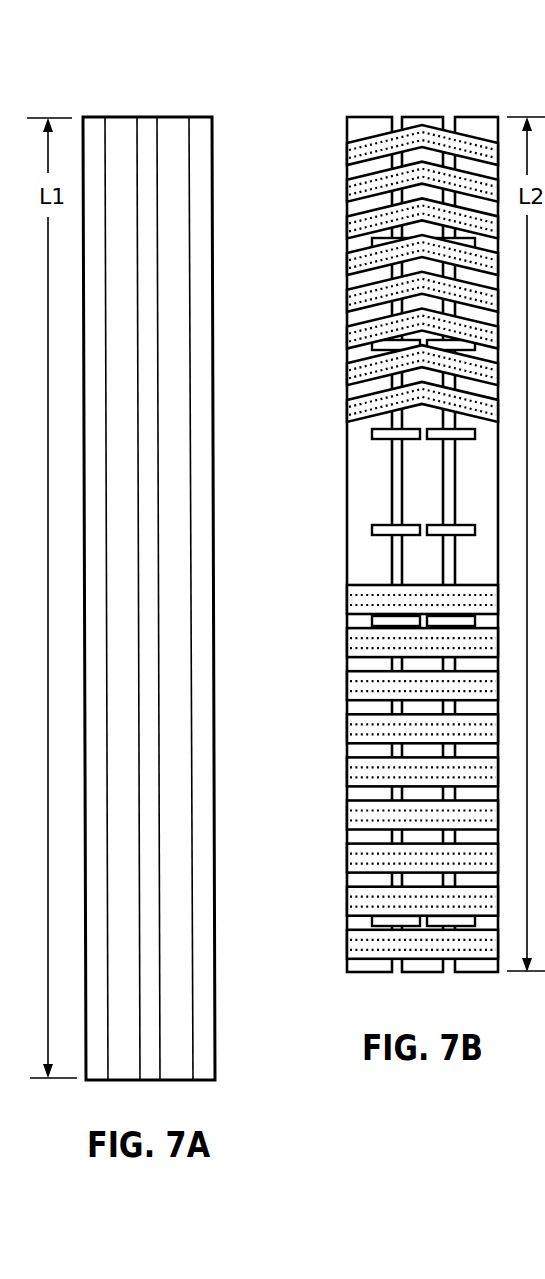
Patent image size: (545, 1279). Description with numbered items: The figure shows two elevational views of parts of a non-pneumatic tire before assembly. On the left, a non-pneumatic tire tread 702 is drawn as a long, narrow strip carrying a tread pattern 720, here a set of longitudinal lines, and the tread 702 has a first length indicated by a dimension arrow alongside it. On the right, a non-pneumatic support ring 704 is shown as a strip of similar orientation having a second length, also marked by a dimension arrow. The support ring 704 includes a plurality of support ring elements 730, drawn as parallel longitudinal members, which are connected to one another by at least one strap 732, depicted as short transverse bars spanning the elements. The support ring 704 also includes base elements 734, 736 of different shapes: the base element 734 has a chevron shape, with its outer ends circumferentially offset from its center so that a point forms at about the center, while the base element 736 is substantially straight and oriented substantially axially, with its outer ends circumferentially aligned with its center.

In FIG. 7A, the non-pneumatic tire tread 702 is at (190, 552).
In FIG. 7A, the tread pattern 720 is at (177, 188).
In FIG. 7B, the non-pneumatic support ring 704 is at (386, 498).
In FIG. 7B, the support ring elements 730 is at (423, 548).
In FIG. 7B, the strap 732 is at (450, 526).
In FIG. 7B, the base element 734 is at (385, 345).
In FIG. 7B, the base element 736 is at (367, 648).